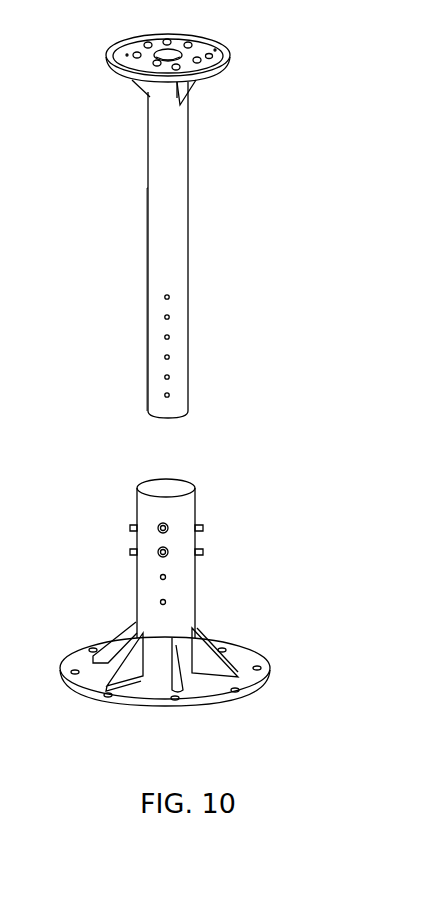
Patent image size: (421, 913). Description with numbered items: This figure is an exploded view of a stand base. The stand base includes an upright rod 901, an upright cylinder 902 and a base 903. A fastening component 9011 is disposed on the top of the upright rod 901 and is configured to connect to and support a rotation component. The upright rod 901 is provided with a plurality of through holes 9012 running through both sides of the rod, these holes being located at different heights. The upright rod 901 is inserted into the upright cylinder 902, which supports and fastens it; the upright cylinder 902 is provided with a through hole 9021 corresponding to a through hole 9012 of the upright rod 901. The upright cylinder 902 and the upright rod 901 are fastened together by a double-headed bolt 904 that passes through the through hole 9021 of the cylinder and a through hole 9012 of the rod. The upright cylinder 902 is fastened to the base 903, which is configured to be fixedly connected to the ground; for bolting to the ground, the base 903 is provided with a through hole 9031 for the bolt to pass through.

The upright rod 901 is at (175, 227).
The fastening component 9011 is at (188, 38).
The through holes 9012 is at (170, 394).
The upright cylinder 902 is at (188, 502).
The through hole 9021 is at (166, 601).
The base 903 is at (235, 658).
The through hole 9031 is at (252, 668).
The double-headed bolt 904 is at (130, 528).